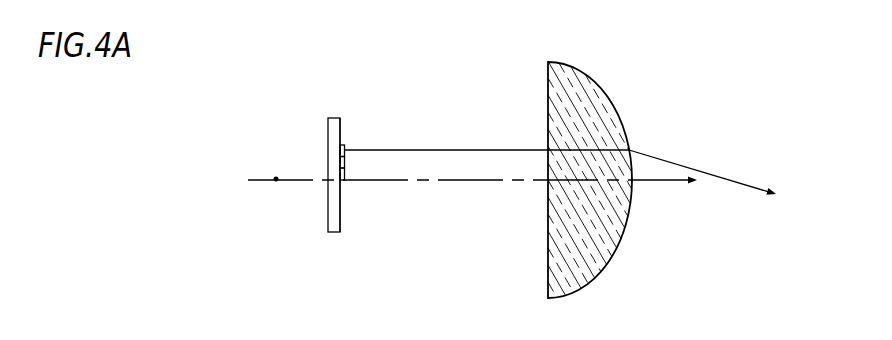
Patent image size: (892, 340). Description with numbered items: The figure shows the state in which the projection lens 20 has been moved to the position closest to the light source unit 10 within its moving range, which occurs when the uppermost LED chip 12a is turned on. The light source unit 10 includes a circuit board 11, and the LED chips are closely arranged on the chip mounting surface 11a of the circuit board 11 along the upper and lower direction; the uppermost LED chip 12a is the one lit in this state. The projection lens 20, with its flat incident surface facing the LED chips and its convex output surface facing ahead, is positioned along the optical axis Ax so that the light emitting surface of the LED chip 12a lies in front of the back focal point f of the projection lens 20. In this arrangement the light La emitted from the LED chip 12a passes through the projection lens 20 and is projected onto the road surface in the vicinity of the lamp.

The light source unit 10 is at (385, 174).
The circuit board 11 is at (337, 240).
The chip mounting surface 11a is at (342, 128).
The uppermost LED chip 12a is at (344, 147).
The projection lens 20 is at (626, 117).
The back focal point f is at (276, 178).
The optical axis Ax is at (484, 190).
The light La is at (744, 185).